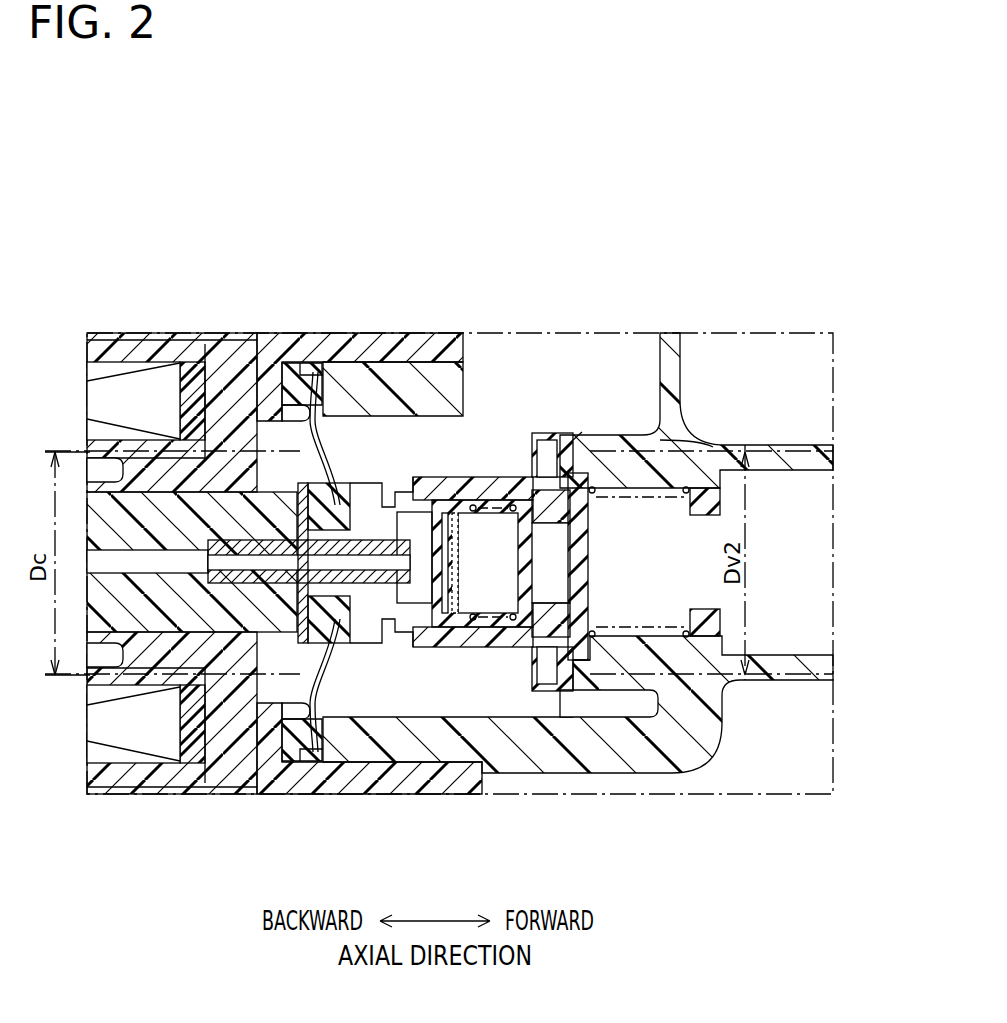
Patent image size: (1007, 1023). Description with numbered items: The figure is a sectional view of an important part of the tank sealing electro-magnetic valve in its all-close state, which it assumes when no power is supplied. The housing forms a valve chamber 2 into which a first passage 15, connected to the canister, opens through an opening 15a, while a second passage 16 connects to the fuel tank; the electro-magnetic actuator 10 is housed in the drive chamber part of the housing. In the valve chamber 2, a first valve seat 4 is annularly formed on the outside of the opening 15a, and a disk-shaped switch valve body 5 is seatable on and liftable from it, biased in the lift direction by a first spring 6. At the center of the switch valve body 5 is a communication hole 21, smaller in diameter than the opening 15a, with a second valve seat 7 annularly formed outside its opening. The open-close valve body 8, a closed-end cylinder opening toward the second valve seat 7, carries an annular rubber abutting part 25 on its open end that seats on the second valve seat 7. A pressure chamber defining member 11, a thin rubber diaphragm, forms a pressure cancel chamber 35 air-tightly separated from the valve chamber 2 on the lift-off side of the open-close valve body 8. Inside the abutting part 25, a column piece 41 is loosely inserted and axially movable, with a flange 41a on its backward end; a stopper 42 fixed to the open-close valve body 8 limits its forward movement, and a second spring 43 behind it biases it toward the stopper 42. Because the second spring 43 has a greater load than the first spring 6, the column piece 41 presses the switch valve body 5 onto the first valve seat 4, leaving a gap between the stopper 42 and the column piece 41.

The valve chamber 2 is at (409, 672).
The first valve seat 4 is at (531, 625).
The switch valve body 5 is at (588, 600).
The first spring 6 is at (600, 660).
The second valve seat 7 is at (560, 650).
The open-close valve body 8 is at (487, 640).
The electro-magnetic actuator 10 is at (133, 775).
The pressure chamber defining member 11 is at (288, 700).
The first passage 15 is at (805, 552).
The opening of the first passage 15a is at (582, 432).
The second passage 16 is at (645, 357).
The communication hole 21 is at (700, 447).
The abutting part 25 is at (572, 440).
The pressure cancel chamber 35 is at (277, 660).
The column piece 41 is at (549, 525).
The flange 41a is at (468, 520).
The stopper 42 is at (520, 505).
The second spring 43 is at (455, 505).